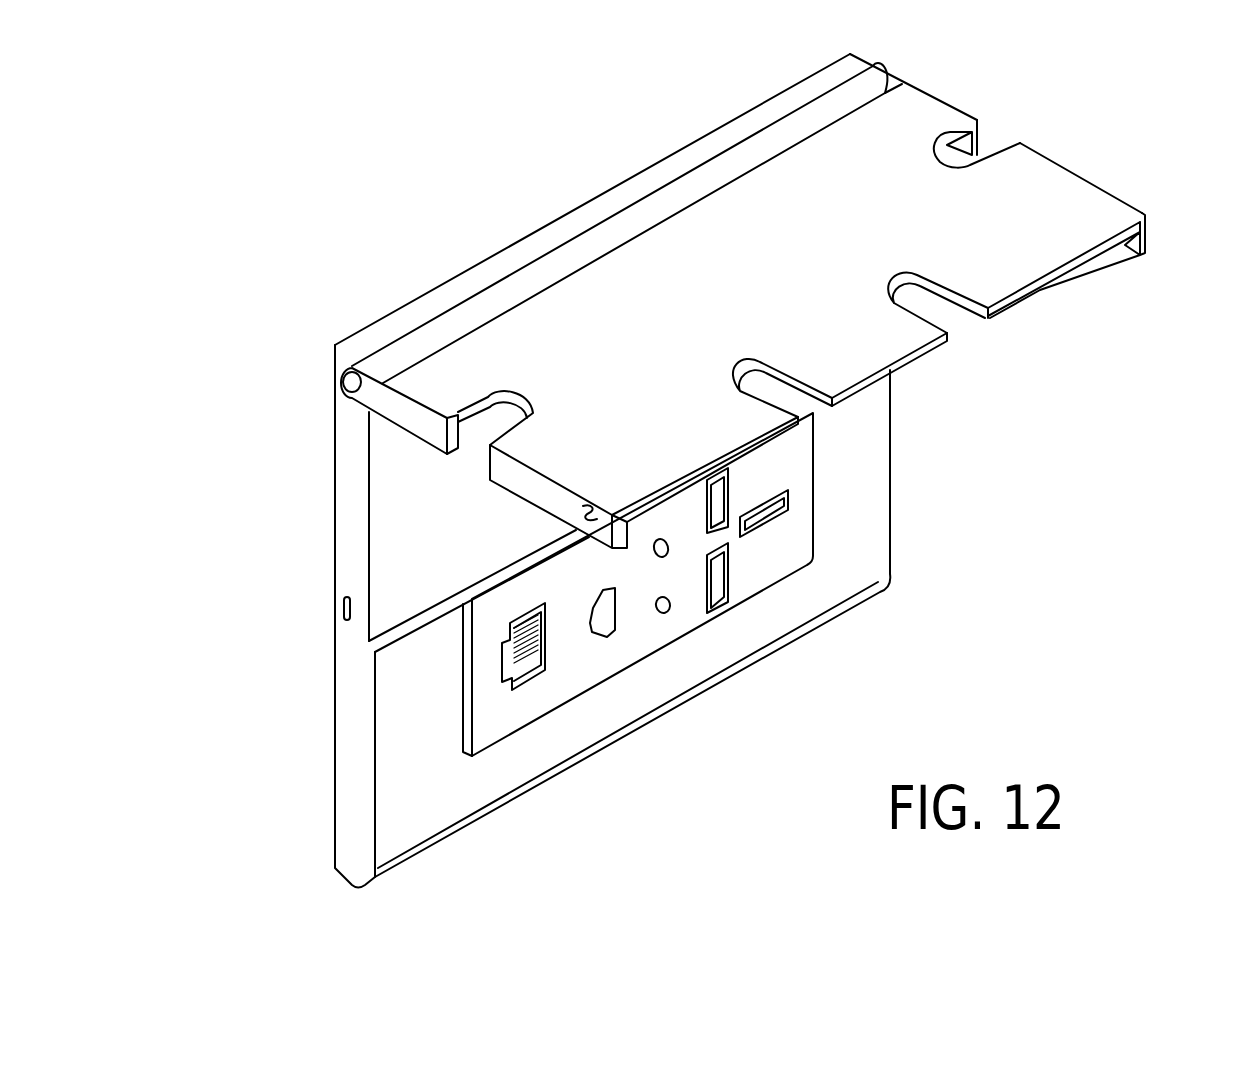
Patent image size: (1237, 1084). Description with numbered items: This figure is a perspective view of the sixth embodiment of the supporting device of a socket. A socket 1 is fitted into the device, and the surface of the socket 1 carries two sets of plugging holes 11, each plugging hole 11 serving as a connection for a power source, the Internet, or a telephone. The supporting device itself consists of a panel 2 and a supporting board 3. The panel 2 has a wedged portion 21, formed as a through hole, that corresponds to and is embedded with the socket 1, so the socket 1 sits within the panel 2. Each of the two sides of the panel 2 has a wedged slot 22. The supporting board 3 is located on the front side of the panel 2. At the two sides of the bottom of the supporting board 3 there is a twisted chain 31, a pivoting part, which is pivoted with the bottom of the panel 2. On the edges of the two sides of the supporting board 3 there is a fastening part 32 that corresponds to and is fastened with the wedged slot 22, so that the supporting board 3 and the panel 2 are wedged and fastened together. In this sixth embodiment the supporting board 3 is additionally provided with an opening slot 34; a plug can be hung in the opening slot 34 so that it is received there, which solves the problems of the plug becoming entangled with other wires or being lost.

The socket 1 is at (577, 677).
The plugging holes 11 is at (503, 672).
The panel 2 is at (450, 807).
The wedged portion 21 is at (462, 742).
The wedged slot 22 is at (347, 602).
The supporting board 3 is at (1097, 272).
The twisted chain 31 is at (357, 386).
The fastening part 32 is at (580, 515).
The opening slot 34 is at (987, 152).